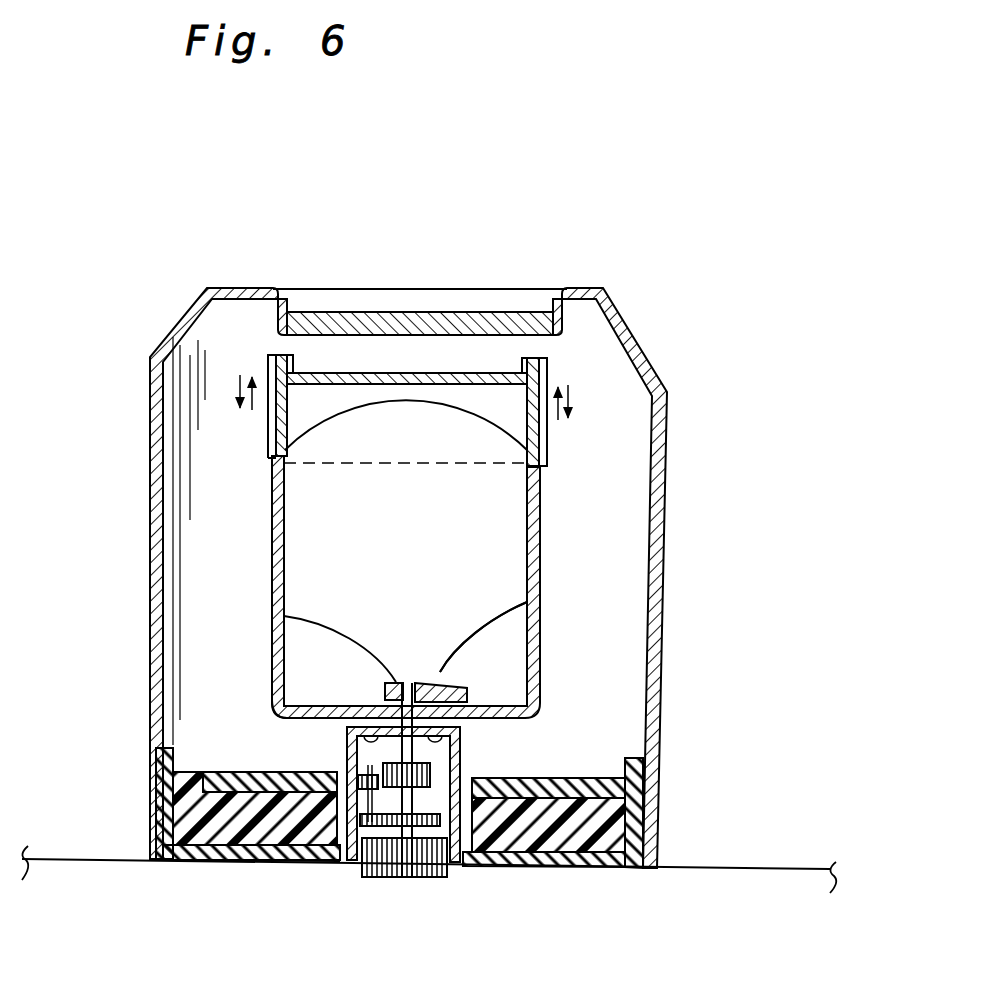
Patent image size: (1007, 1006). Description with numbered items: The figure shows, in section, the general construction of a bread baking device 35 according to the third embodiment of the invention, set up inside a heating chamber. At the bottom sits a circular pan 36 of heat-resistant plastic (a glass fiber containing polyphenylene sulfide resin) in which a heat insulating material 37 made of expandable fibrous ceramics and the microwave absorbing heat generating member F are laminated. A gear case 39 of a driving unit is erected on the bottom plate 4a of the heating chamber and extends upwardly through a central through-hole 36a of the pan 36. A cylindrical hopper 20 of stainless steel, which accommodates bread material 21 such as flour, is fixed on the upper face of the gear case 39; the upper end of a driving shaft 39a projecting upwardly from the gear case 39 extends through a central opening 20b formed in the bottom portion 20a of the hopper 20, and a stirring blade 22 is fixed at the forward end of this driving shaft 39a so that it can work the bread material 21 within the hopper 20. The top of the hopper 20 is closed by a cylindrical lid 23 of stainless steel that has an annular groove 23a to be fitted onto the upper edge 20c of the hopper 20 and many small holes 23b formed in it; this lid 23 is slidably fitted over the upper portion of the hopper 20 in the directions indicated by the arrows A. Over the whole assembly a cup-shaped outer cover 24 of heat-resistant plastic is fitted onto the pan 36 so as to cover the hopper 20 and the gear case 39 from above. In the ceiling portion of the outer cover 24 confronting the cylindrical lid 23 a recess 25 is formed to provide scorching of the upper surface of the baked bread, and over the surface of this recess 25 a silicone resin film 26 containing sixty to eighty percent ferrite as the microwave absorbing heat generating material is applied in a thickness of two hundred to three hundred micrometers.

The bottom plate 4a is at (773, 869).
The cylindrical hopper 20 is at (548, 538).
The bottom portion 20a is at (307, 718).
The central opening 20b is at (395, 685).
The upper edge 20c is at (547, 372).
The bread material 21 is at (500, 503).
The stirring blade 22 is at (455, 685).
The cylindrical lid 23 is at (470, 365).
The annular groove 23a is at (264, 368).
The small holes 23b is at (327, 372).
The outer cover 24 is at (650, 372).
The recess 25 is at (447, 313).
The silicone resin film 26 is at (390, 312).
The bread baking device 35 is at (600, 252).
The circular pan 36 is at (632, 824).
The central through-hole 36a is at (340, 862).
The heat insulating material 37 is at (638, 788).
The gear case 39 is at (470, 757).
The driving shaft 39a is at (537, 593).
The arrows A is at (396, 379).
The microwave absorbing heat generating member F is at (563, 778).